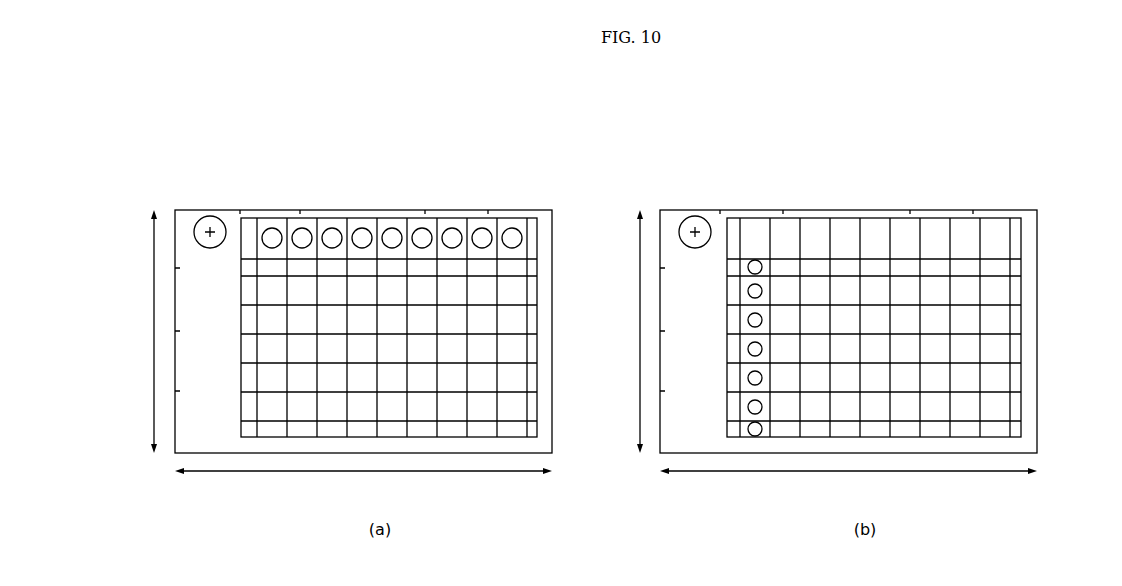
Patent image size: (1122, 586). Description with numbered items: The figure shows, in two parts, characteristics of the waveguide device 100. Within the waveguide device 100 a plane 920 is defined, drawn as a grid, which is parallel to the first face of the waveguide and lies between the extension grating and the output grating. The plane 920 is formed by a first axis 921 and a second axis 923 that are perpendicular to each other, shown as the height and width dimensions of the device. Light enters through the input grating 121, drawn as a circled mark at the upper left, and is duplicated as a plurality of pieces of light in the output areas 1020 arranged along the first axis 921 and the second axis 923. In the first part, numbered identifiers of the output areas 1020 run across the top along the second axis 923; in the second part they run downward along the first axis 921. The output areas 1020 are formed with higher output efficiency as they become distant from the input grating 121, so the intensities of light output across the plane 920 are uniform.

The waveguide device 100 is at (446, 203).
The input grating 121 is at (210, 216).
The plane 920 is at (283, 222).
The output areas 1020 is at (387, 222).
The first axis 921 is at (370, 331).
The second axis 923 is at (606, 483).